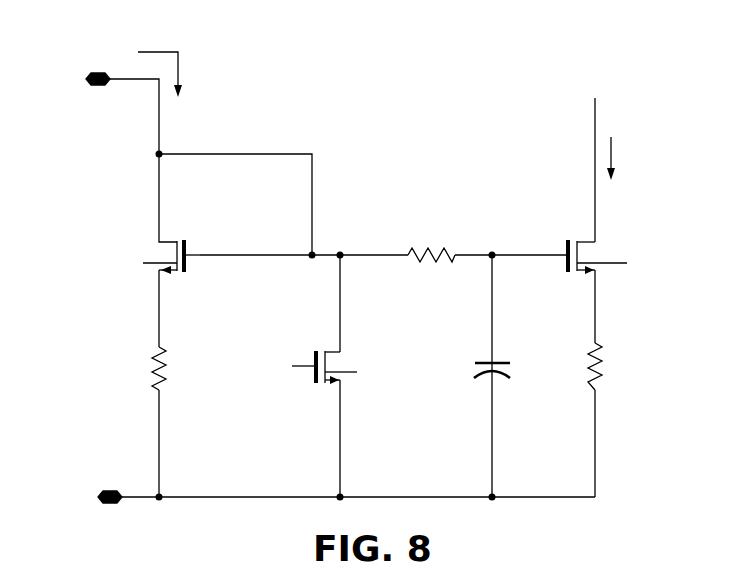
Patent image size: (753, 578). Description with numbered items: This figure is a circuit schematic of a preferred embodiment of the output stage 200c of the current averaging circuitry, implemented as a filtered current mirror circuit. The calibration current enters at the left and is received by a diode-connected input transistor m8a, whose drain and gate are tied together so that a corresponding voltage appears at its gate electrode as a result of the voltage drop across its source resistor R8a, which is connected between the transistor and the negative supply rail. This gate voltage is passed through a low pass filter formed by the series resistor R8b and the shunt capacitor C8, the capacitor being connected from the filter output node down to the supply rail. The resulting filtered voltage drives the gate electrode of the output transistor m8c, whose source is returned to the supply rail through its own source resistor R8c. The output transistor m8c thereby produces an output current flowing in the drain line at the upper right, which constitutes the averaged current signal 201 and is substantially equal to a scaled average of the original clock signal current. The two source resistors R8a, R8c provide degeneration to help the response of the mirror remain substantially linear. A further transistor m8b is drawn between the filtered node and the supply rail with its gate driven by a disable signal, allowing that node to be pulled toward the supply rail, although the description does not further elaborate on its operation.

The output stage 200c is at (593, 48).
The averaged current signal 201 is at (593, 152).
The diode-connected input transistor m8a is at (192, 252).
The transistor m8b is at (349, 358).
The output transistor m8c is at (608, 252).
The source resistor R8a is at (134, 368).
The series resistor R8b is at (431, 243).
The source resistor R8c is at (618, 366).
The shunt capacitor C8 is at (509, 372).